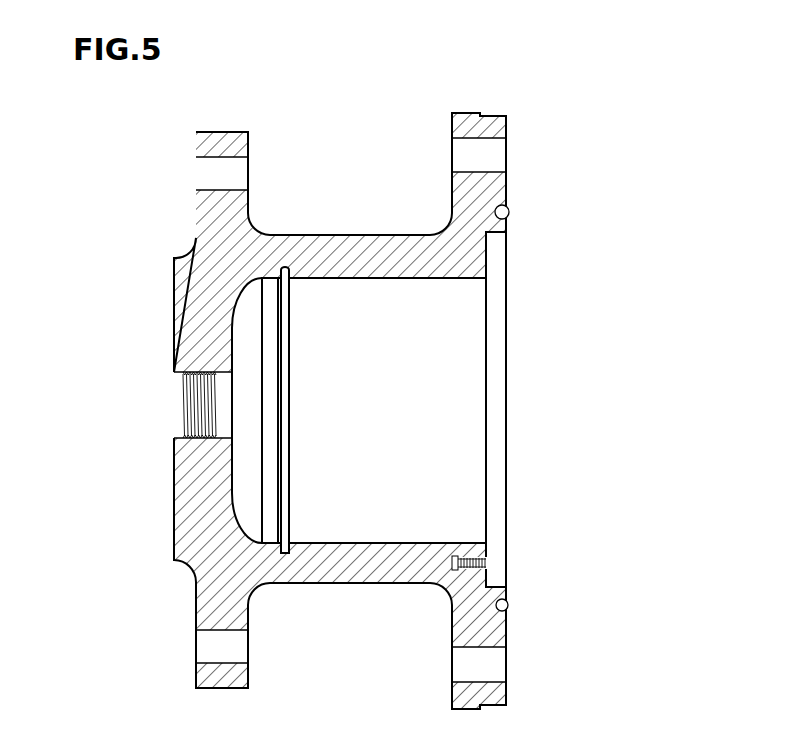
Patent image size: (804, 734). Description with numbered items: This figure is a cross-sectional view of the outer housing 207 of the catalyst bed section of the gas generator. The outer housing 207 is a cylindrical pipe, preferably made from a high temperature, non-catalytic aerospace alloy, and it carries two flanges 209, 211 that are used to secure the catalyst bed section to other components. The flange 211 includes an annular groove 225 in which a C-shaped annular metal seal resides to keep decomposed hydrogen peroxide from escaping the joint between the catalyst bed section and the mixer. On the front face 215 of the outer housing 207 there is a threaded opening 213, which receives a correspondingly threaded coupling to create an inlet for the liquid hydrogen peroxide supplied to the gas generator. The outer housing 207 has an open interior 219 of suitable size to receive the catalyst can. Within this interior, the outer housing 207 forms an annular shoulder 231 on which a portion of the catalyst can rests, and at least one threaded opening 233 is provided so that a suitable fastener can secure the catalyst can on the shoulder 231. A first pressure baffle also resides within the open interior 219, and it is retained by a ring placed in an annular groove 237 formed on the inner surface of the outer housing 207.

The outer housing 207 is at (280, 411).
The flange 209 is at (222, 612).
The flange 211 is at (465, 617).
The threaded opening 213 is at (197, 403).
The front face 215 is at (175, 515).
The open interior 219 is at (455, 370).
The annular groove 225 is at (507, 605).
The annular shoulder 231 is at (497, 252).
The threaded opening 233 is at (490, 565).
The annular groove 237 is at (287, 540).